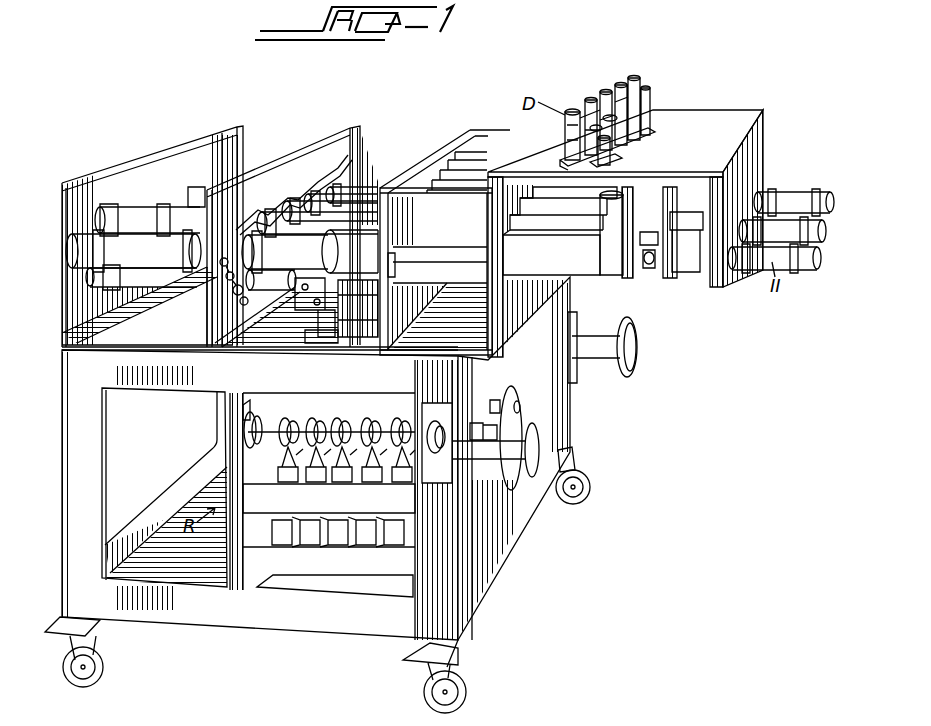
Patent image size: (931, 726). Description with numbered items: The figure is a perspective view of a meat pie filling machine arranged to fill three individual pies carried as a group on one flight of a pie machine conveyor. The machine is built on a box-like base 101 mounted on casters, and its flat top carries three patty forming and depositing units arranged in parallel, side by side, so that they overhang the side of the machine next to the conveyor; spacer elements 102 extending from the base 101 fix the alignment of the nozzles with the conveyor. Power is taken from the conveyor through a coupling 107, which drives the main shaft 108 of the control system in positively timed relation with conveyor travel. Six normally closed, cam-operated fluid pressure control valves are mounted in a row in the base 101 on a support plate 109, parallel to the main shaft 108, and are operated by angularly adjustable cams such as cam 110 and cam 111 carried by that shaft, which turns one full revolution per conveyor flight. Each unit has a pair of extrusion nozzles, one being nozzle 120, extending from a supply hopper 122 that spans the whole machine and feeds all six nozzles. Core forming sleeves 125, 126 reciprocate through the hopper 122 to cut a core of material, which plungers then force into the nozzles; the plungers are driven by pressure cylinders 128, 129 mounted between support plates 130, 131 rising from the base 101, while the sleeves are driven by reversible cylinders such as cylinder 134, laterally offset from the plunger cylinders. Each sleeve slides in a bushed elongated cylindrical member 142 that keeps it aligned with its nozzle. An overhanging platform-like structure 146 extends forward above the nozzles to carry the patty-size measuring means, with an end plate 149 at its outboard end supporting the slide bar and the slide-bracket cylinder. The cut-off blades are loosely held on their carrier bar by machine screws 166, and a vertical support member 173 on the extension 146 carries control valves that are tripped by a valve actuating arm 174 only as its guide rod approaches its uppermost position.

The box-like base 101 is at (495, 551).
The spacer elements 102 is at (540, 447).
The coupling 107 is at (517, 420).
The main shaft 108 is at (272, 418).
The support plate 109 is at (307, 512).
The cam 110 is at (318, 412).
The cam 111 is at (340, 412).
The extrusion nozzle 120 is at (572, 270).
The supply hopper 122 is at (396, 254).
The core forming sleeve 125 is at (276, 289).
The core forming sleeve 126 is at (317, 213).
The pressure cylinder 128 is at (133, 260).
The pressure cylinder 129 is at (145, 220).
The support plate 130 is at (303, 152).
The support plate 131 is at (218, 131).
The reversible cylinder 134 is at (175, 283).
The elongated cylindrical member 142 is at (368, 265).
The overhanging platform-like structure 146 is at (712, 152).
The end plate 149 is at (760, 165).
The machine screws 166 is at (618, 158).
The vertically disposed support member 173 is at (572, 145).
The valve actuating arm 174 is at (585, 110).